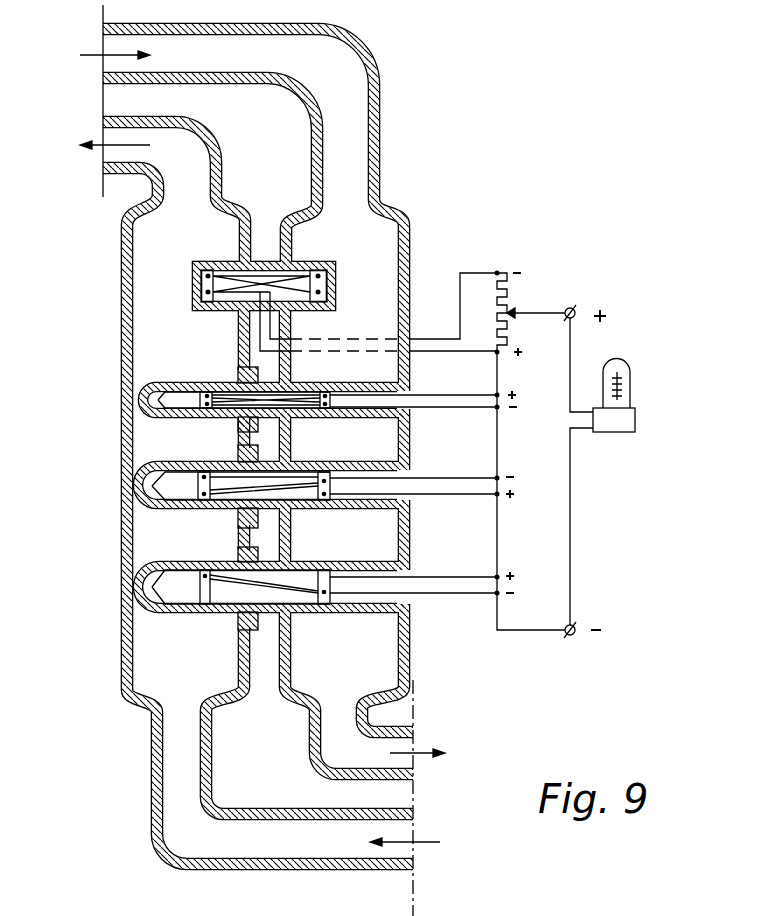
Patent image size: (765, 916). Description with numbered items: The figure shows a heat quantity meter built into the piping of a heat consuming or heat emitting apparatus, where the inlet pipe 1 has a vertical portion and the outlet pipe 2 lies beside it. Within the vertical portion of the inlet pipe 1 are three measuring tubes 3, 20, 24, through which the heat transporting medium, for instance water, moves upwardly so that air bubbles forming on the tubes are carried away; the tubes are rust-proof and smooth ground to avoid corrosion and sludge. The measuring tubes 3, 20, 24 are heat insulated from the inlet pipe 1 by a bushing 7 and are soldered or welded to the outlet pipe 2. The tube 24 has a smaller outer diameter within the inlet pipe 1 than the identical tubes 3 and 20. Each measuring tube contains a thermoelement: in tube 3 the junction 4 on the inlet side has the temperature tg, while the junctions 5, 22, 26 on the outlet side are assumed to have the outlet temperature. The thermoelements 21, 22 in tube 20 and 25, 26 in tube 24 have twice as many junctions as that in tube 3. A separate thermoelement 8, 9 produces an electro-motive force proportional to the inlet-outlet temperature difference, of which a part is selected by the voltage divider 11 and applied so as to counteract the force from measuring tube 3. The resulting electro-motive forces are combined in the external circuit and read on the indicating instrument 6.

The inlet pipe 1 is at (152, 762).
The outlet pipe 2 is at (305, 712).
The measuring tube 3 is at (186, 612).
The thermoelement junction 4 is at (208, 606).
The junction 5 is at (330, 575).
The indicating instrument 6 is at (625, 432).
The bushing 7 is at (238, 421).
The thermoelement junction 8 is at (197, 282).
The thermoelement junction 9 is at (337, 287).
The voltage divider 11 is at (497, 294).
The junction temperature tg is at (200, 580).
The measuring tube 20 is at (186, 508).
The thermoelement junction 21 is at (203, 452).
The junction 22 is at (365, 450).
The measuring tube 24 is at (188, 418).
The thermoelement junction 25 is at (207, 390).
The junction 26 is at (326, 392).